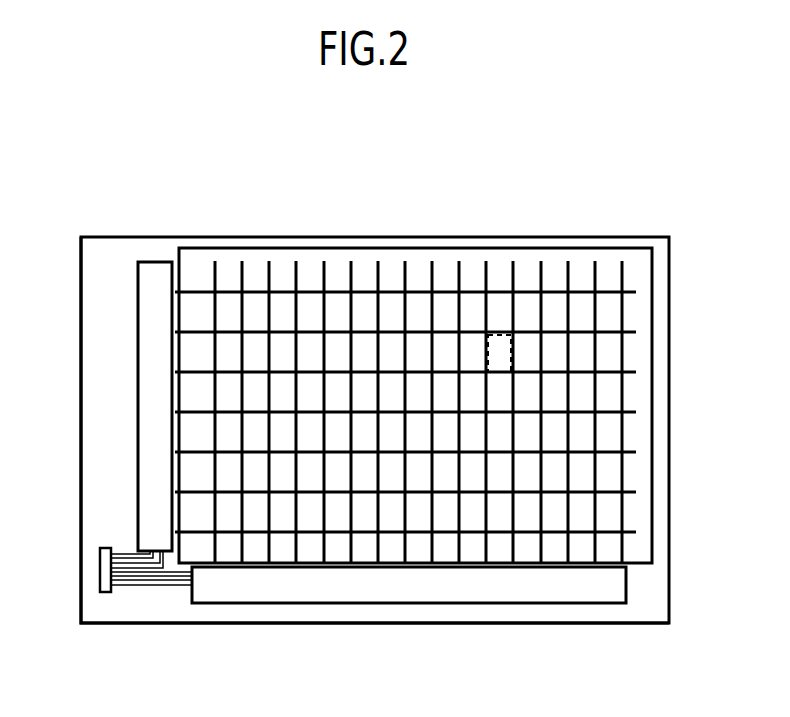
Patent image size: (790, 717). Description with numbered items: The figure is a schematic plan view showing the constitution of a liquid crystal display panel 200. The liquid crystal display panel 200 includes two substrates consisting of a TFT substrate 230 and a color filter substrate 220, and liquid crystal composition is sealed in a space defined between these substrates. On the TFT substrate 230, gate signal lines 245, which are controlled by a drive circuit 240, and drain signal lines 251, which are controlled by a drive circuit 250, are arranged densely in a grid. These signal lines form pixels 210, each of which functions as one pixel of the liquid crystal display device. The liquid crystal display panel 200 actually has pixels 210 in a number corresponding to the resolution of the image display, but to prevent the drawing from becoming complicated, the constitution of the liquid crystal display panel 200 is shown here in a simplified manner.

The liquid crystal display panel 200 is at (393, 155).
The pixel 210 is at (500, 335).
The color filter substrate 220 is at (322, 247).
The TFT substrate 230 is at (120, 282).
The drive circuit 240 is at (155, 417).
The gate signal lines 245 is at (608, 497).
The drive circuit 250 is at (392, 588).
The drain signal lines 251 is at (595, 472).